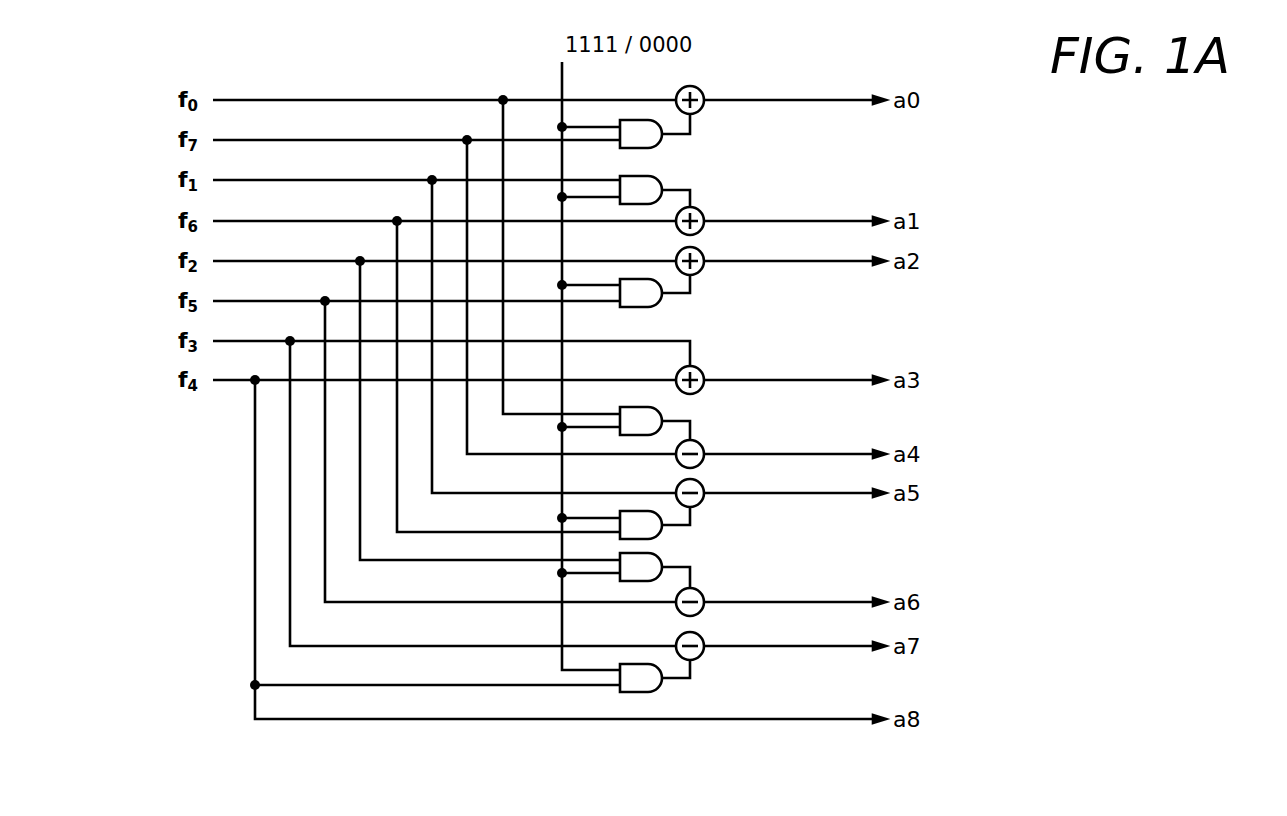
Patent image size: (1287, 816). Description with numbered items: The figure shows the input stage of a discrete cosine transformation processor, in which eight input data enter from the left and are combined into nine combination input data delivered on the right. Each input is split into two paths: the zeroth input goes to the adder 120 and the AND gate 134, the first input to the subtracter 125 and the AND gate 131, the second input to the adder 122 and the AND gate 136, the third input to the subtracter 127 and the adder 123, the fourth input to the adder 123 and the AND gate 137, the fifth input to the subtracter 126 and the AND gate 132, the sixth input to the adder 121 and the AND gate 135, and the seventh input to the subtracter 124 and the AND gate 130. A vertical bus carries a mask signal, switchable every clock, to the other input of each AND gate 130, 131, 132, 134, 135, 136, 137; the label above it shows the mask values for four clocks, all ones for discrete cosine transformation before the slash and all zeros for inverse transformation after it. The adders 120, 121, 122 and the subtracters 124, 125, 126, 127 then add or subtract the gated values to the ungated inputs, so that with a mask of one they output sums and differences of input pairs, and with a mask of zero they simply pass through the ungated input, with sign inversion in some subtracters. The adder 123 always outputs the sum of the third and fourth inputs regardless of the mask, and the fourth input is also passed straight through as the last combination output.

The adder 120 is at (700, 89).
The adder 121 is at (700, 210).
The adder 122 is at (700, 272).
The adder 123 is at (700, 369).
The subtracter 124 is at (700, 443).
The subtracter 125 is at (700, 504).
The subtracter 126 is at (700, 613).
The subtracter 127 is at (700, 657).
The AND gate 130 is at (655, 148).
The AND gate 131 is at (652, 177).
The AND gate 132 is at (655, 307).
The AND gate 134 is at (652, 407).
The AND gate 135 is at (652, 539).
The AND gate 136 is at (652, 553).
The AND gate 137 is at (652, 692).